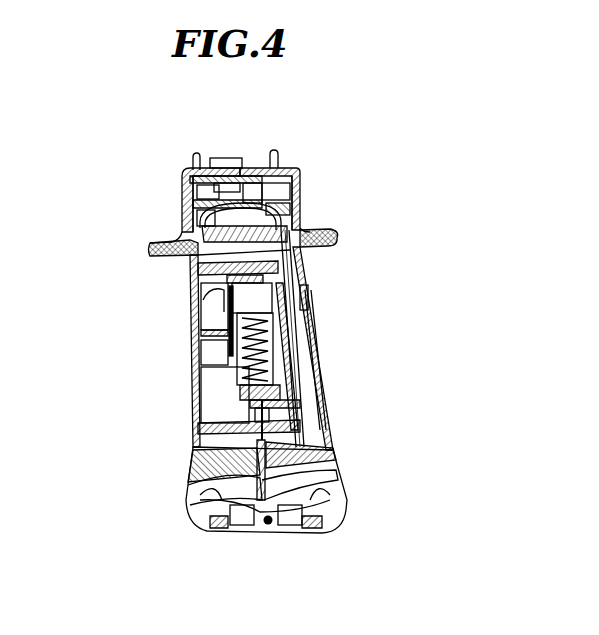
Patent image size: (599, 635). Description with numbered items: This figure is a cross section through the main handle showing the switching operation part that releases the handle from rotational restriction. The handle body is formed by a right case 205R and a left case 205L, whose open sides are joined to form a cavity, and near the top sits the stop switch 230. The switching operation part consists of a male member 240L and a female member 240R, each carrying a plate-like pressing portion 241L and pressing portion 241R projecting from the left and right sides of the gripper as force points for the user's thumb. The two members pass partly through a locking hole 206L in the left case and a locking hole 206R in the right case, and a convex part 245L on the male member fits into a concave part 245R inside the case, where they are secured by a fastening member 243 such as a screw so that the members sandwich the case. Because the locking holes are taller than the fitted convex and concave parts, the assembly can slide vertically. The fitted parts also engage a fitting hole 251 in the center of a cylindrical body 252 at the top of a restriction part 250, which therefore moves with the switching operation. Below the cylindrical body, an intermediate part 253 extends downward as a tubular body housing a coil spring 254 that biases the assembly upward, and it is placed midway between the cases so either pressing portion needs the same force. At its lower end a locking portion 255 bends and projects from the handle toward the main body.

The stop switch 230 is at (222, 156).
The fitting hole 251 is at (240, 237).
The convex part 245L is at (299, 200).
The male member 240L is at (313, 217).
The female member 240R is at (172, 218).
The concave part 245R is at (188, 240).
The pressing portion 241L is at (338, 236).
The pressing portion 241R is at (150, 255).
The cylindrical body 252 is at (298, 273).
The fastening member 243 is at (192, 275).
The locking hole 206L is at (305, 284).
The locking hole 206R is at (208, 297).
The coil spring 254 is at (275, 340).
The restriction part 250 is at (225, 341).
The left case 205L is at (317, 378).
The right case 205R is at (193, 385).
The intermediate part 253 is at (232, 378).
The locking portion 255 is at (262, 500).